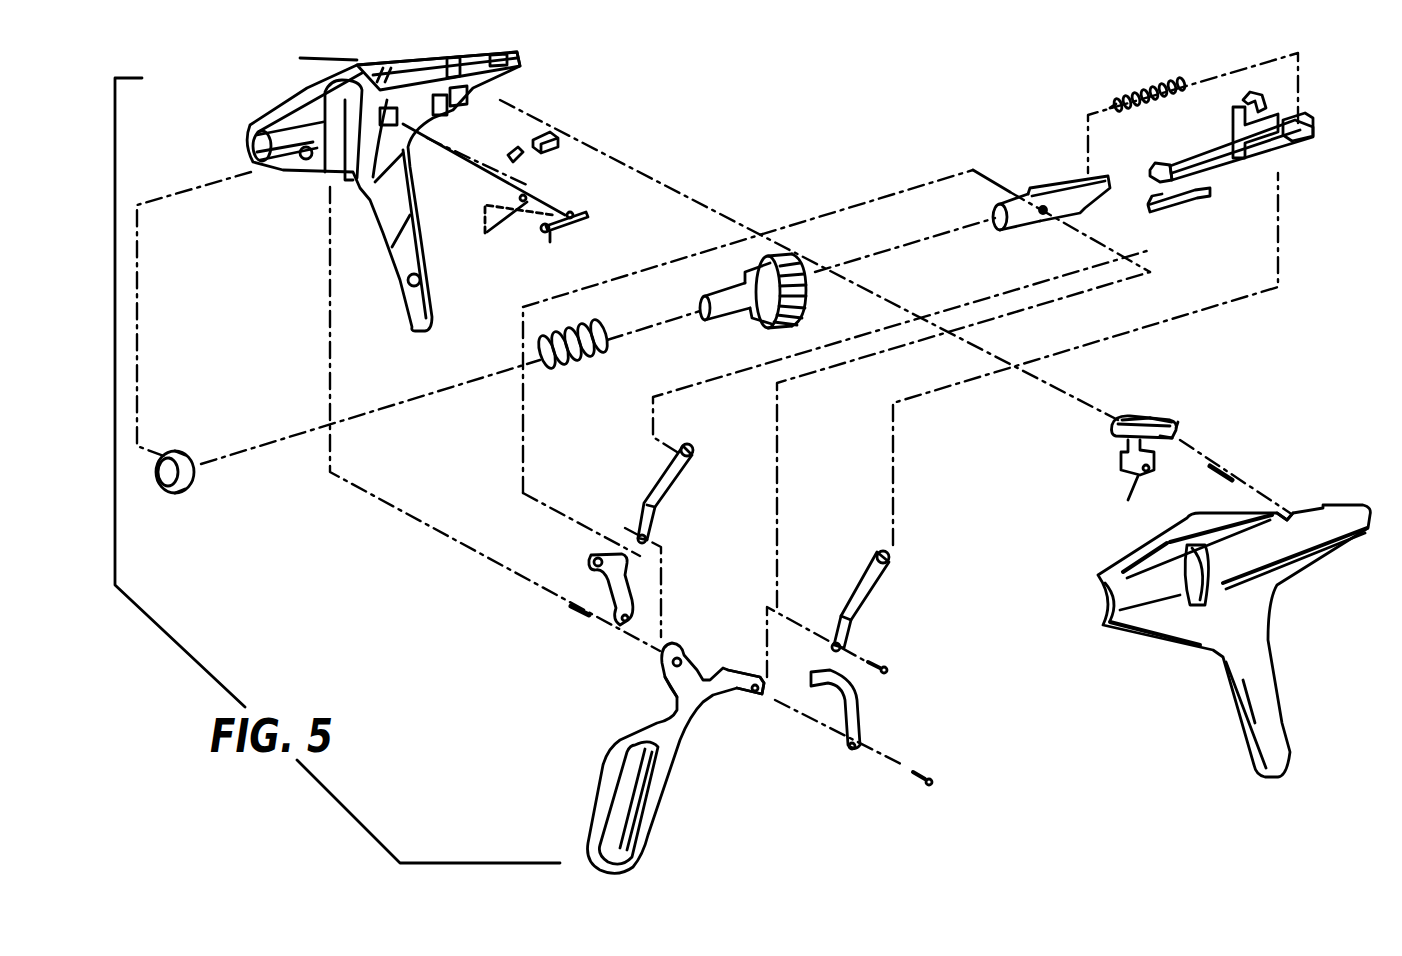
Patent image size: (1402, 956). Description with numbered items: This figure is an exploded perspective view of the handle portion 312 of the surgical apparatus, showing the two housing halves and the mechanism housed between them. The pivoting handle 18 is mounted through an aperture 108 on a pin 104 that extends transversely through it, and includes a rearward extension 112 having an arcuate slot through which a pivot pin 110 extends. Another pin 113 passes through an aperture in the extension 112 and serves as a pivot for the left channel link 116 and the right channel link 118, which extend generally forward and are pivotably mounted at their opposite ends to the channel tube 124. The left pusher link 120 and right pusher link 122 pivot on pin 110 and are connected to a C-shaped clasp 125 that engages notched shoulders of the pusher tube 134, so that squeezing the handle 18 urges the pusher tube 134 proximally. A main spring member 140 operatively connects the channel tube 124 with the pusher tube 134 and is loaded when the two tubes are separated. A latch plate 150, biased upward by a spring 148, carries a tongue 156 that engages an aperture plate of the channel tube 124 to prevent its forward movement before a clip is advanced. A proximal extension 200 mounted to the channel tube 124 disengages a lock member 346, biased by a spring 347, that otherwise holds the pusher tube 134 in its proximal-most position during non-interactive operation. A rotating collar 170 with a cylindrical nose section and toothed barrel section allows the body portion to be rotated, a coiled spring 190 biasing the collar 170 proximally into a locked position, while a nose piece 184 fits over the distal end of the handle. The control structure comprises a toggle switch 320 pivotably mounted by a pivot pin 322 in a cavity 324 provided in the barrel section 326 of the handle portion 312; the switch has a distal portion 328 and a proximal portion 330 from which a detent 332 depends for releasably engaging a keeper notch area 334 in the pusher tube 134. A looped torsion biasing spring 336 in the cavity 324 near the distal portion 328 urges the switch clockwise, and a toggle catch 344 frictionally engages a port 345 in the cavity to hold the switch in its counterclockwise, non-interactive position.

The pivoting handle 18 is at (615, 761).
The pin 104 is at (571, 611).
The aperture 108 is at (684, 655).
The pivot pin 110 is at (891, 663).
The rearward extension 112 is at (749, 700).
The pin 113 is at (916, 781).
The left channel link 116 is at (862, 706).
The right channel link 118 is at (604, 550).
The left pusher link 120 is at (873, 575).
The right pusher link 122 is at (676, 466).
The channel tube 124 is at (1049, 167).
The C-shaped clasp 125 is at (1240, 100).
The pusher tube 134 is at (1316, 141).
The main spring member 140 is at (1147, 98).
The spring 148 is at (503, 233).
The latch plate 150 is at (593, 215).
The tongue 156 is at (541, 233).
The rotating collar 170 is at (780, 330).
The nose piece 184 is at (170, 450).
The coiled spring 190 is at (597, 365).
The proximal extension 200 is at (1173, 210).
The handle portion 312 is at (300, 172).
The toggle switch 320 is at (1181, 413).
The pivot pin 322 is at (1234, 469).
The cavity 324 is at (520, 65).
The barrel section 326 is at (357, 65).
The distal portion 328 is at (1114, 426).
The proximal portion 330 is at (1168, 418).
The detent 332 is at (1172, 436).
The keeper notch area 334 is at (1303, 112).
The biasing spring 336 is at (1136, 475).
The toggle catch 344 is at (1128, 418).
The port 345 is at (1299, 511).
The lock member 346 is at (560, 135).
The spring 347 is at (523, 158).